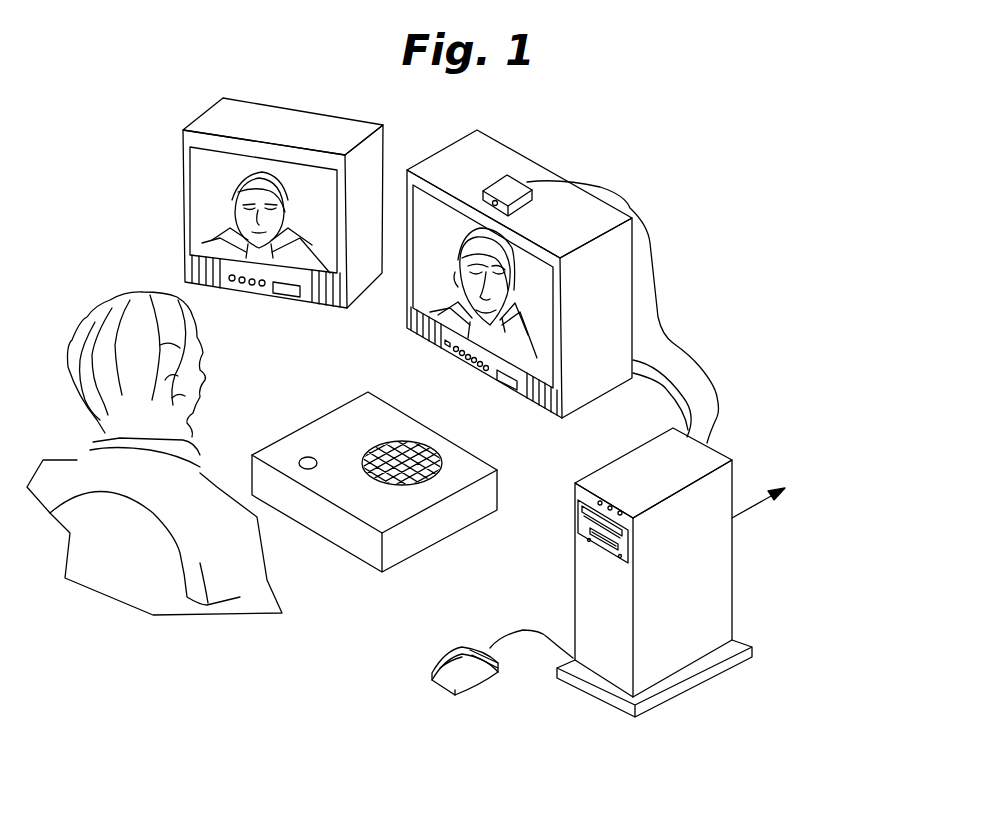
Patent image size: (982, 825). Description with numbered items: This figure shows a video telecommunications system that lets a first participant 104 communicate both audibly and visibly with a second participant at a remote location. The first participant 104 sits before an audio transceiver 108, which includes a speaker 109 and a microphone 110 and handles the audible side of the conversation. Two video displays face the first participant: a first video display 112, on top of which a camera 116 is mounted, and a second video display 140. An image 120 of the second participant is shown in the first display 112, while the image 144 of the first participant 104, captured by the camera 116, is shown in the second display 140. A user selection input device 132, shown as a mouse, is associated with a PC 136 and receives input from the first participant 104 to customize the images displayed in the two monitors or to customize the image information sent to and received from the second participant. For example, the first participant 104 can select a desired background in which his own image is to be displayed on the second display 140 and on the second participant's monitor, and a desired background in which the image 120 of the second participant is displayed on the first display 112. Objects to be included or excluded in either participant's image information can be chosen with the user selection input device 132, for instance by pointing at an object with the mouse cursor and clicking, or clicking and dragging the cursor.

The first participant 104 is at (122, 292).
The audio transceiver 108 is at (360, 472).
The speaker 109 is at (412, 447).
The microphone 110 is at (308, 457).
The first video display 112 is at (563, 275).
The camera 116 is at (523, 180).
The image of the second participant 120 is at (490, 323).
The user selection input device 132 is at (468, 687).
The PC 136 is at (732, 575).
The second video display 140 is at (228, 164).
The image of the first participant 144 is at (230, 203).